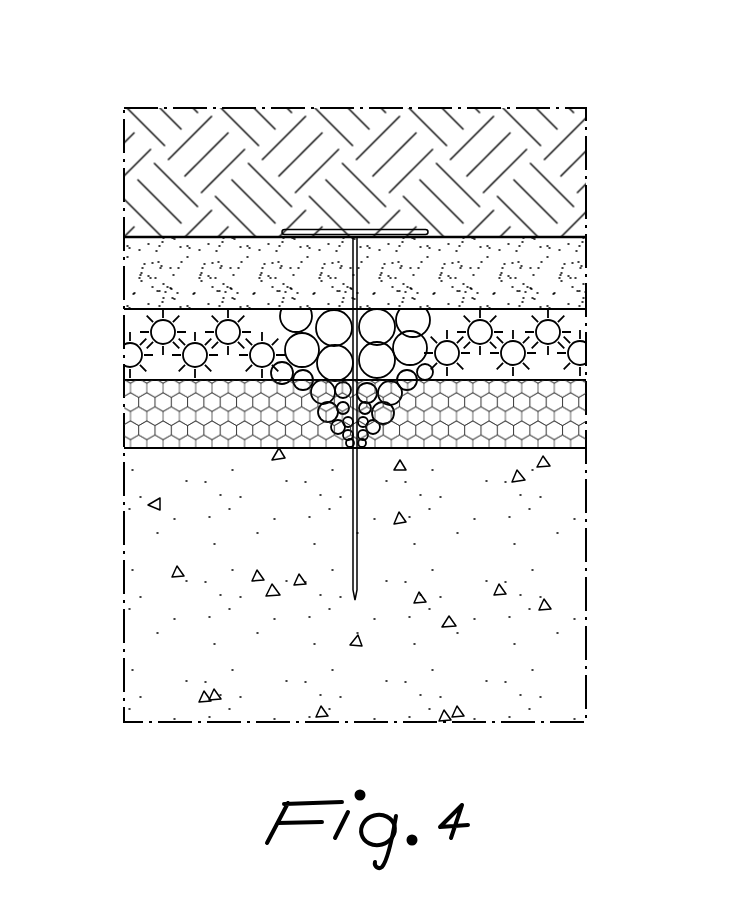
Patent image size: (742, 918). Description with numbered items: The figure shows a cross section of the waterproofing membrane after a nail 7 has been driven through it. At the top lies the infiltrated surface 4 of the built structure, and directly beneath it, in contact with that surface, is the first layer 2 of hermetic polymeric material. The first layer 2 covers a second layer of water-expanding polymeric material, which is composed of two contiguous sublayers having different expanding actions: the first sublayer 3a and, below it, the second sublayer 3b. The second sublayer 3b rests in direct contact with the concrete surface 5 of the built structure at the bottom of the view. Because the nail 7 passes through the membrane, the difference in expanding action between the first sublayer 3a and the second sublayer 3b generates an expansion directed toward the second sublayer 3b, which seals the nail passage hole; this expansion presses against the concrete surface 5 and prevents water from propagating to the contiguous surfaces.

The infiltrated surface 4 is at (472, 150).
The first layer 2 is at (150, 268).
The first sublayer 3a is at (150, 338).
The second sublayer 3b is at (150, 415).
The concrete surface 5 is at (185, 552).
The nail 7 is at (357, 225).